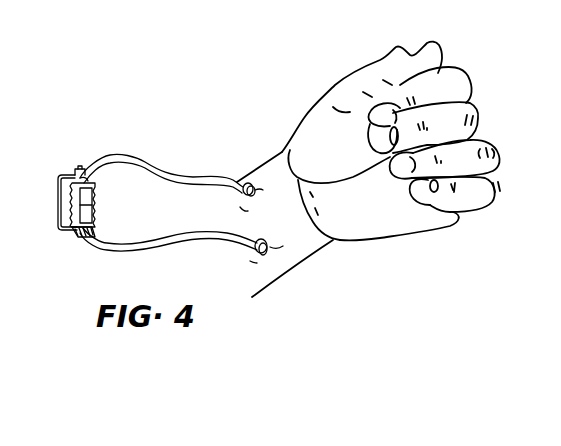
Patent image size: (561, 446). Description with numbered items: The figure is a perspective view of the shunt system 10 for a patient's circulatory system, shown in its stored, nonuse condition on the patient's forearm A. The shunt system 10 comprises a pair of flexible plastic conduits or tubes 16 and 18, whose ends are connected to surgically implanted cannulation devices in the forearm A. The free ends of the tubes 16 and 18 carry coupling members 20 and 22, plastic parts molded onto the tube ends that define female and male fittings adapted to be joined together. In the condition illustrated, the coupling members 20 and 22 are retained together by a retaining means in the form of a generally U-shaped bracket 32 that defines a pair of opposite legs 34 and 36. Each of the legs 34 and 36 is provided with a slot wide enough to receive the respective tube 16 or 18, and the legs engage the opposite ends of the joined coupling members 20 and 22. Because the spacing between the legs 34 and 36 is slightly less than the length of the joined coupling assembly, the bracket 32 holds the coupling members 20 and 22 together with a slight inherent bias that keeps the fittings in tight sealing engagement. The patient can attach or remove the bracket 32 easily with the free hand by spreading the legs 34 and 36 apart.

The shunt system 10 is at (110, 150).
The flexible tube 16 is at (143, 245).
The flexible tube 18 is at (143, 160).
The coupling member 20 is at (97, 213).
The coupling member 22 is at (93, 197).
The U-shaped bracket 32 is at (60, 203).
The leg of bracket 34 is at (88, 187).
The leg of bracket 36 is at (88, 227).
The forearm A is at (272, 163).